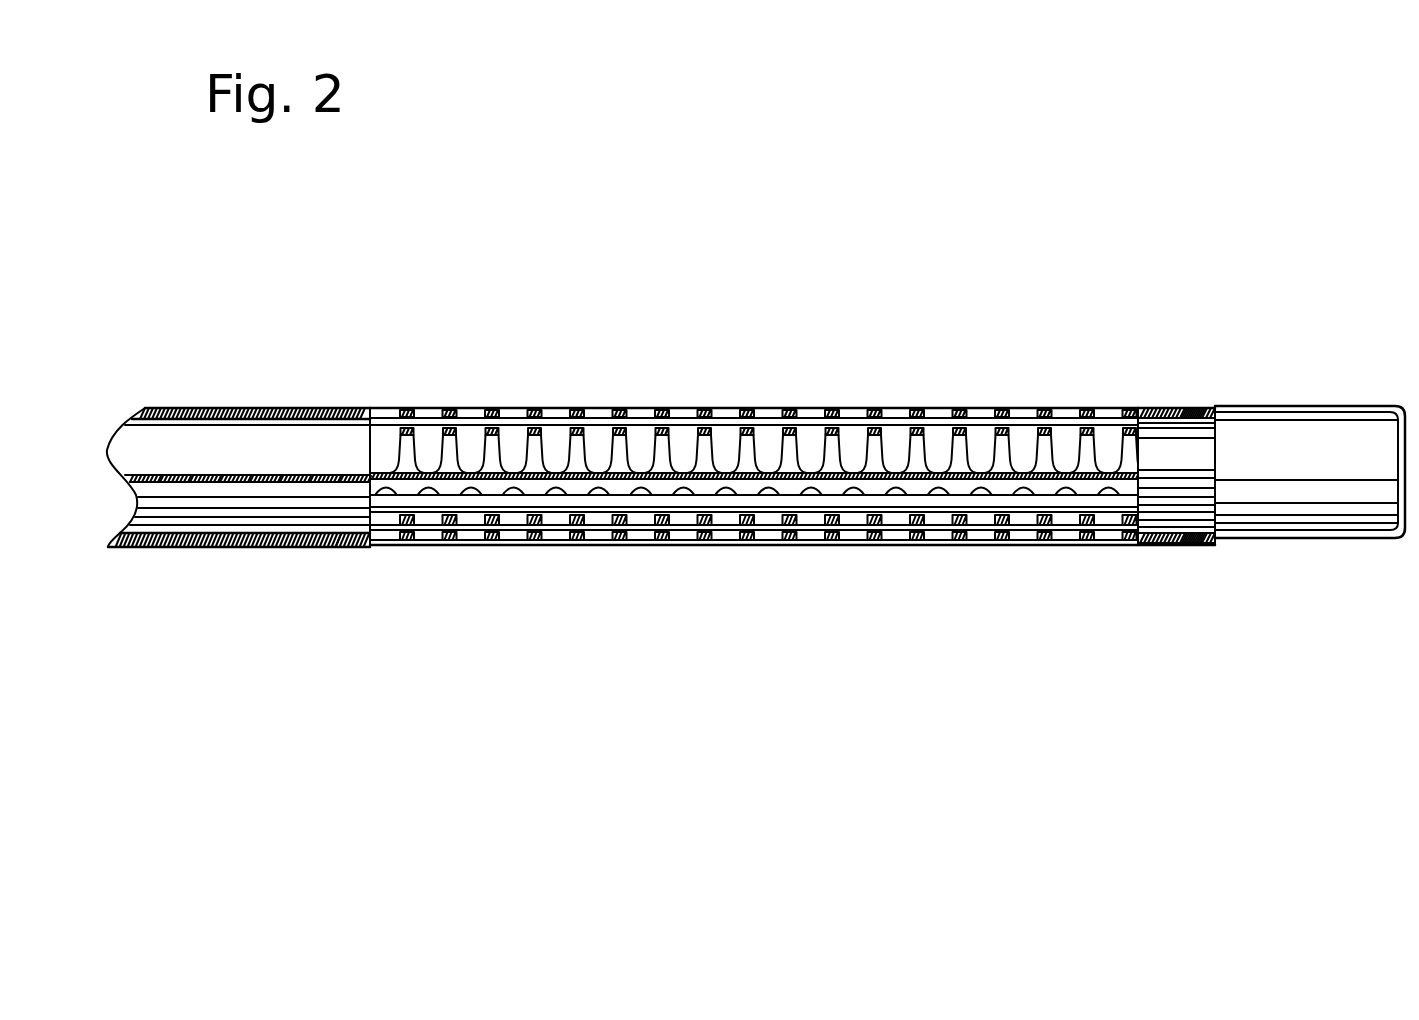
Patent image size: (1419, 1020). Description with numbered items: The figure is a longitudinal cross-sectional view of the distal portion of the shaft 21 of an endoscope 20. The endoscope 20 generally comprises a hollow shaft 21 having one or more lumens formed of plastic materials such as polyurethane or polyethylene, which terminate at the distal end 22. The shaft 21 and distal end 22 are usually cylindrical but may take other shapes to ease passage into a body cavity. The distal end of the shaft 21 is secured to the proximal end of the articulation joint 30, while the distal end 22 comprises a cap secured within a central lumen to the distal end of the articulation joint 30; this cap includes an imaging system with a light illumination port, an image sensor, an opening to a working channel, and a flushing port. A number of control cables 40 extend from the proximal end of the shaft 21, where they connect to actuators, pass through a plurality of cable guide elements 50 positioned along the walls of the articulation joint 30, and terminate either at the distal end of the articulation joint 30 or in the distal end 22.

The endoscope 20 is at (555, 577).
The shaft 21 is at (217, 503).
The distal end 22 is at (1302, 437).
The articulation joint 30 is at (745, 408).
The control cables 40 is at (335, 590).
The cable guide elements 50 is at (677, 605).